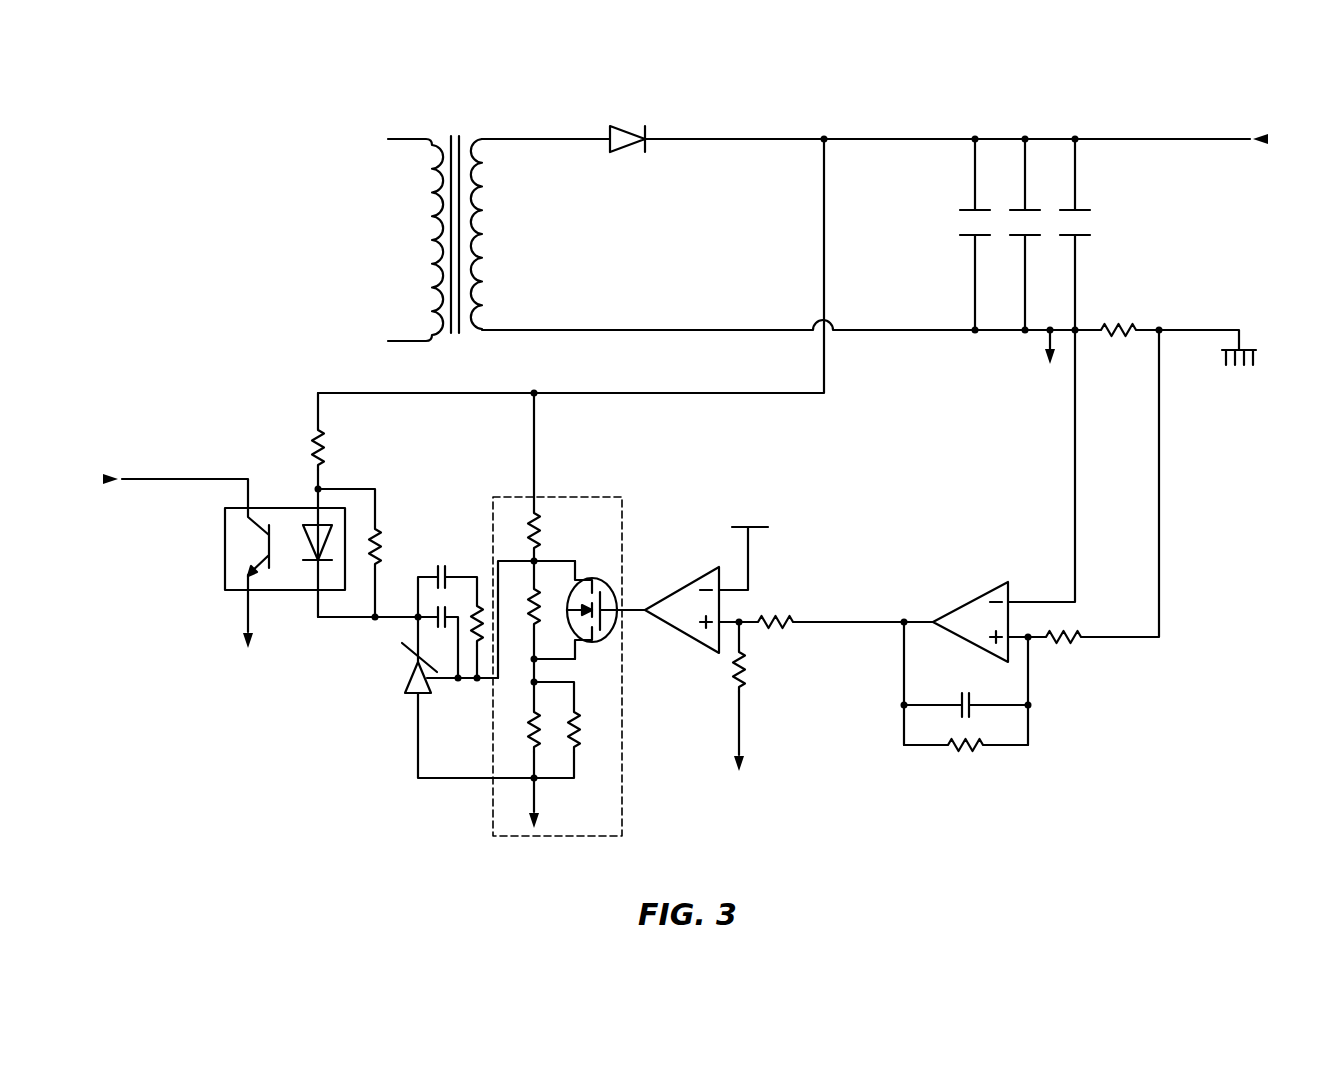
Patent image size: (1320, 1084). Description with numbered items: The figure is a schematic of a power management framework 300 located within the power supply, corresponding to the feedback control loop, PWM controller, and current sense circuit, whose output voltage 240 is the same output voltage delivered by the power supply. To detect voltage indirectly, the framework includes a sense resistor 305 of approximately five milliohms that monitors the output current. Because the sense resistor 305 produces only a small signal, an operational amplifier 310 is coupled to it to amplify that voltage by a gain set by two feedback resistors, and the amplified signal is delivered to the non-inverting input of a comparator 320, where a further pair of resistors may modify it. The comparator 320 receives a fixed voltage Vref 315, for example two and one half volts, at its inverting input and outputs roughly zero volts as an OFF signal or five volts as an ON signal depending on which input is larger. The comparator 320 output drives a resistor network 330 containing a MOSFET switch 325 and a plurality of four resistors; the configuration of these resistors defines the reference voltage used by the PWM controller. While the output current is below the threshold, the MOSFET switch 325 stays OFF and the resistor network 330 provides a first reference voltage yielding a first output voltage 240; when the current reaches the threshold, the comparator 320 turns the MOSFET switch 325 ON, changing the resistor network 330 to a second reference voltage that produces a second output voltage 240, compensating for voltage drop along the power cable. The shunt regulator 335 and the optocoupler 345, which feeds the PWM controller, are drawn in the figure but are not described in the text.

The power management framework 300 is at (270, 186).
The output voltage 240 is at (1199, 145).
The sense resistor 305 is at (1120, 288).
The operational amplifier 310 is at (970, 598).
The fixed voltage Vref 315 is at (750, 494).
The comparator 320 is at (698, 642).
The MOSFET switch 325 is at (598, 582).
The resistor network 330 is at (561, 838).
The shunt regulator TL431 335 is at (407, 692).
The optocoupler 345 is at (226, 548).